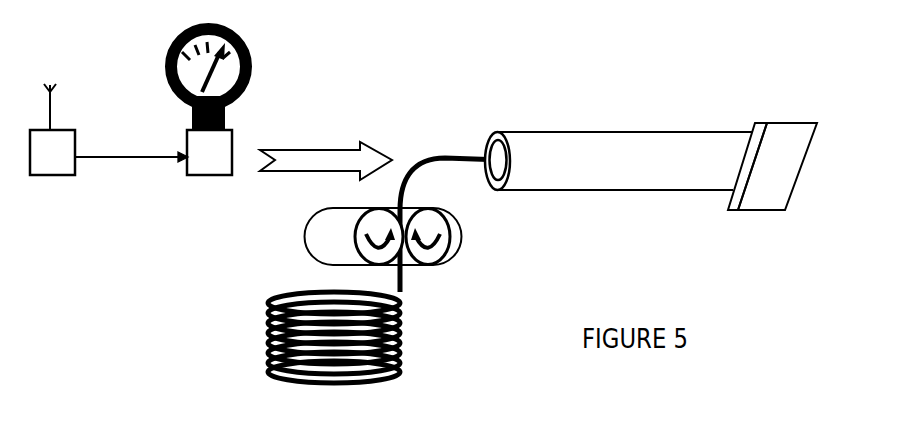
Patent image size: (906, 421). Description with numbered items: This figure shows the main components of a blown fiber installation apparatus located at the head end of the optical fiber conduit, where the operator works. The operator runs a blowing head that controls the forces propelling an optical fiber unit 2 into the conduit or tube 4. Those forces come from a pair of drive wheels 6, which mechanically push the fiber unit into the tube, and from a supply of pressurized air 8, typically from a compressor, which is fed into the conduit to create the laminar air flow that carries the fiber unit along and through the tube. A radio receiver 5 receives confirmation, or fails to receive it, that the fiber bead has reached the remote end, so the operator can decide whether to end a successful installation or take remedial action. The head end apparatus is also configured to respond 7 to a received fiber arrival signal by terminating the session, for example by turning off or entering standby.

The optical fiber unit 2 is at (270, 302).
The conduit or tube 4 is at (617, 191).
The radio receiver 5 is at (52, 129).
The pair of drive wheels 6 is at (312, 229).
The response to fiber arrival signal 7 is at (126, 158).
The supply of pressurized air 8 is at (208, 102).